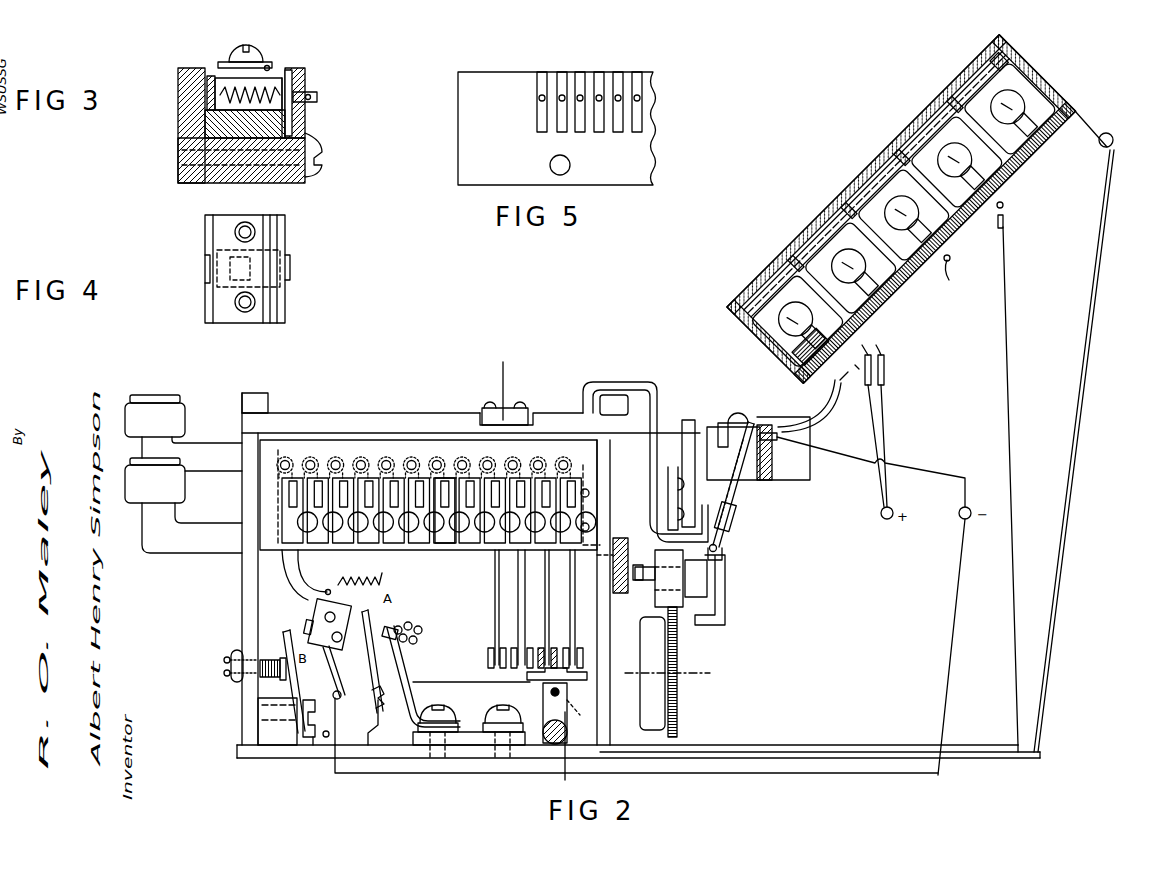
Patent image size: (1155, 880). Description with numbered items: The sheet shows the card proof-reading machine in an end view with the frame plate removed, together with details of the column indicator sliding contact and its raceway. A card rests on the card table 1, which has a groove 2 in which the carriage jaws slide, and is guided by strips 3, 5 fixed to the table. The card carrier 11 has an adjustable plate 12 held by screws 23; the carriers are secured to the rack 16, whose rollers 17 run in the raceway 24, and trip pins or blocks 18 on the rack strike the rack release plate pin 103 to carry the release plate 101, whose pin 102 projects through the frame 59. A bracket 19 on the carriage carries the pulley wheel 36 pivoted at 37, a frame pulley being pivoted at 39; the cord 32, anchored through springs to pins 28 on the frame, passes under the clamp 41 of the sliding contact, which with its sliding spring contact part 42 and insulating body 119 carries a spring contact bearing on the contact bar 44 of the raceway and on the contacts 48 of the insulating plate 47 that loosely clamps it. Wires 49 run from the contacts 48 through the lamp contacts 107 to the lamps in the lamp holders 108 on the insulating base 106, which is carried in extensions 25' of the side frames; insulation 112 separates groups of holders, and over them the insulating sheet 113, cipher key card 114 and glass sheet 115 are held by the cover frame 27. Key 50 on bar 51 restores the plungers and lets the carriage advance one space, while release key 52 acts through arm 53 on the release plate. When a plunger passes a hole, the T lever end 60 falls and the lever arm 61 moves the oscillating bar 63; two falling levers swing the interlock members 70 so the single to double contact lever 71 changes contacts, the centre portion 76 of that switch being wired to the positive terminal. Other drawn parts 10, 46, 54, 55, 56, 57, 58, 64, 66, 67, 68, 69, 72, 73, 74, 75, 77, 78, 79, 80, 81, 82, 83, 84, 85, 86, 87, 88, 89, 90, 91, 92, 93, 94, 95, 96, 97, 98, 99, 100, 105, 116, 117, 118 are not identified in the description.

In FIG. 2, the card table 1 is at (305, 414).
In FIG. 2, the groove 2 is at (478, 420).
In FIG. 2, the guide strip 3 is at (252, 393).
In FIG. 2, the guide strip 5 is at (614, 405).
In FIG. 3, the terminal block 10 is at (318, 170).
In FIG. 2, the terminal block 10 is at (773, 474).
In FIG. 2, the card carrier 11 is at (597, 382).
In FIG. 2, the adjustable plate 12 is at (503, 362).
In FIG. 2, the rack 16 is at (673, 580).
In FIG. 2, the rollers 17 is at (703, 600).
In FIG. 2, the trip pins or blocks 18 is at (650, 565).
In FIG. 2, the bracket 19 is at (670, 495).
In FIG. 2, the screws 23 is at (500, 400).
In FIG. 2, the raceway 24 is at (725, 585).
In FIG. 2, the side frame extensions 25' is at (1080, 444).
In FIG. 2, the cover frame 27 is at (727, 307).
In FIG. 2, the pins 28 is at (720, 553).
In FIG. 3, the cord 32 is at (272, 63).
In FIG. 2, the pulley wheel 36 is at (717, 540).
In FIG. 2, the pivot 37 is at (734, 523).
In FIG. 2, the pivot 39 is at (738, 487).
In FIG. 3, the clamp 41 is at (218, 62).
In FIG. 2, the clamp 41 is at (751, 420).
In FIG. 3, the sliding spring contact part 42 is at (255, 50).
In FIG. 2, the sliding spring contact part 42 is at (733, 413).
In FIG. 3, the contact bar 44 is at (212, 68).
In FIG. 2, the contact bar 44 is at (718, 423).
In FIG. 3, the block 46 is at (177, 125).
In FIG. 2, the block 46 is at (707, 427).
In FIG. 3, the insulating plate 47 is at (305, 75).
In FIG. 5, the insulating plate 47 is at (632, 142).
In FIG. 2, the insulating plate 47 is at (772, 458).
In FIG. 3, the contacts 48 is at (312, 103).
In FIG. 5, the contacts 48 is at (618, 72).
In FIG. 2, the contacts 48 is at (777, 437).
In FIG. 2, the wires 49 is at (828, 395).
In FIG. 2, the key 50 is at (155, 416).
In FIG. 2, the bar 51 is at (192, 451).
In FIG. 2, the release key 52 is at (155, 480).
In FIG. 2, the arm 53 is at (192, 512).
In FIG. 2, the plate 54 is at (667, 673).
In FIG. 2, the rack 55 is at (680, 697).
In FIG. 2, the base 56 is at (973, 759).
In FIG. 2, the cover 57 is at (1072, 516).
In FIG. 2, the side wall 58 is at (248, 585).
In FIG. 2, the frame 59 is at (607, 633).
In FIG. 2, the T lever end 60 is at (290, 493).
In FIG. 2, the lever arm 61 is at (497, 635).
In FIG. 2, the oscillating bar 63 is at (512, 645).
In FIG. 2, the contact bar 64 is at (490, 653).
In FIG. 2, the conductor 66 is at (587, 482).
In FIG. 2, the contact 67 is at (590, 492).
In FIG. 2, the reed 68 is at (445, 548).
In FIG. 2, the contact screw 69 is at (378, 462).
In FIG. 2, the interlock members 70 is at (330, 522).
In FIG. 2, the single to double contact lever 71 is at (290, 572).
In FIG. 2, the spring 72 is at (380, 572).
In FIG. 2, the contact 73 is at (343, 610).
In FIG. 2, the contact block 74 is at (312, 612).
In FIG. 2, the insulator 75 is at (308, 625).
In FIG. 2, the centre portion of single to double contact switch 76 is at (330, 660).
In FIG. 2, the contact arm 77 is at (367, 622).
In FIG. 2, the pivot 78 is at (368, 722).
In FIG. 2, the arm 79 is at (390, 705).
In FIG. 2, the latch 80 is at (373, 693).
In FIG. 2, the nut 81 is at (420, 633).
In FIG. 2, the screw 82 is at (410, 624).
In FIG. 2, the arm 83 is at (397, 660).
In FIG. 2, the base block 84 is at (475, 742).
In FIG. 2, the bearing 85 is at (508, 710).
In FIG. 2, the bearing 86 is at (495, 705).
In FIG. 2, the arm 87 is at (288, 636).
In FIG. 2, the conductor 88 is at (313, 738).
In FIG. 2, the latch 89 is at (313, 713).
In FIG. 2, the housing 90 is at (268, 733).
In FIG. 2, the terminal 91 is at (223, 671).
In FIG. 2, the terminal 92 is at (233, 652).
In FIG. 2, the coil 93 is at (273, 677).
In FIG. 2, the plate 94 is at (480, 681).
In FIG. 2, the bar 95 is at (557, 673).
In FIG. 2, the bracket 96 is at (527, 682).
In FIG. 2, the pivot 97 is at (551, 693).
In FIG. 2, the plate 98 is at (545, 707).
In FIG. 2, the conductor 99 is at (565, 780).
In FIG. 2, the screw 100 is at (555, 745).
In FIG. 2, the release plate 101 is at (620, 538).
In FIG. 2, the pin 102 is at (595, 569).
In FIG. 2, the rack release plate pin 103 is at (640, 583).
In FIG. 2, the plunger 105 is at (690, 467).
In FIG. 2, the insulating base 106 is at (1023, 167).
In FIG. 2, the lamp contacts 107 is at (1007, 207).
In FIG. 2, the lamp holders 108 is at (1000, 70).
In FIG. 2, the insulation 112 is at (767, 343).
In FIG. 2, the insulating sheet 113 is at (890, 180).
In FIG. 2, the cipher key card 114 is at (867, 193).
In FIG. 2, the glass sheet 115 is at (917, 123).
In FIG. 3, the slot 116 is at (235, 112).
In FIG. 4, the slot 116 is at (210, 258).
In FIG. 3, the passage 117 is at (235, 140).
In FIG. 4, the passage 117 is at (290, 265).
In FIG. 3, the passage 118 is at (235, 160).
In FIG. 3, the sliding contact body 119 is at (304, 135).
In FIG. 4, the sliding contact body 119 is at (285, 240).